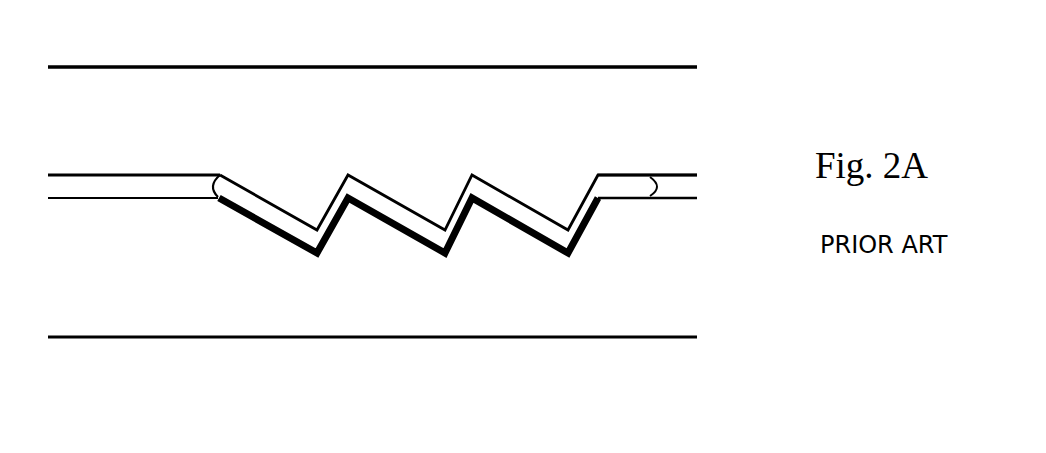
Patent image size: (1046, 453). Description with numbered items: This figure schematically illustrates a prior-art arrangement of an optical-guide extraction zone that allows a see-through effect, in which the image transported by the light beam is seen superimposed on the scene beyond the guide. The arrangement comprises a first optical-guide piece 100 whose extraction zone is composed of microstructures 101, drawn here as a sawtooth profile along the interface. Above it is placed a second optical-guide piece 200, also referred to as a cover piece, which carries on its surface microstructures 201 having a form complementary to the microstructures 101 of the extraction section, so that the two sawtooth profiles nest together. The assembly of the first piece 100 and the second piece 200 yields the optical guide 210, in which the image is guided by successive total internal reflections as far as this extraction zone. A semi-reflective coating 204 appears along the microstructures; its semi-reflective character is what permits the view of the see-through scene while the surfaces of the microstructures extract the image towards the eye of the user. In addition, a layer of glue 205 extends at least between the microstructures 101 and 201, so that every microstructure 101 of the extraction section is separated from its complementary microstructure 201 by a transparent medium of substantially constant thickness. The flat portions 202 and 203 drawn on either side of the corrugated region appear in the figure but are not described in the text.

The first optical-guide piece 100 is at (418, 338).
The microstructures 101 is at (410, 258).
The second optical-guide piece 200 is at (420, 66).
The microstructures 201 is at (420, 172).
The lower flat portion 202 is at (133, 200).
The upper flat portion 203 is at (130, 174).
The semi-reflective coating 204 is at (227, 207).
The layer of glue 205 is at (630, 190).
The optical guide 210 is at (197, 48).